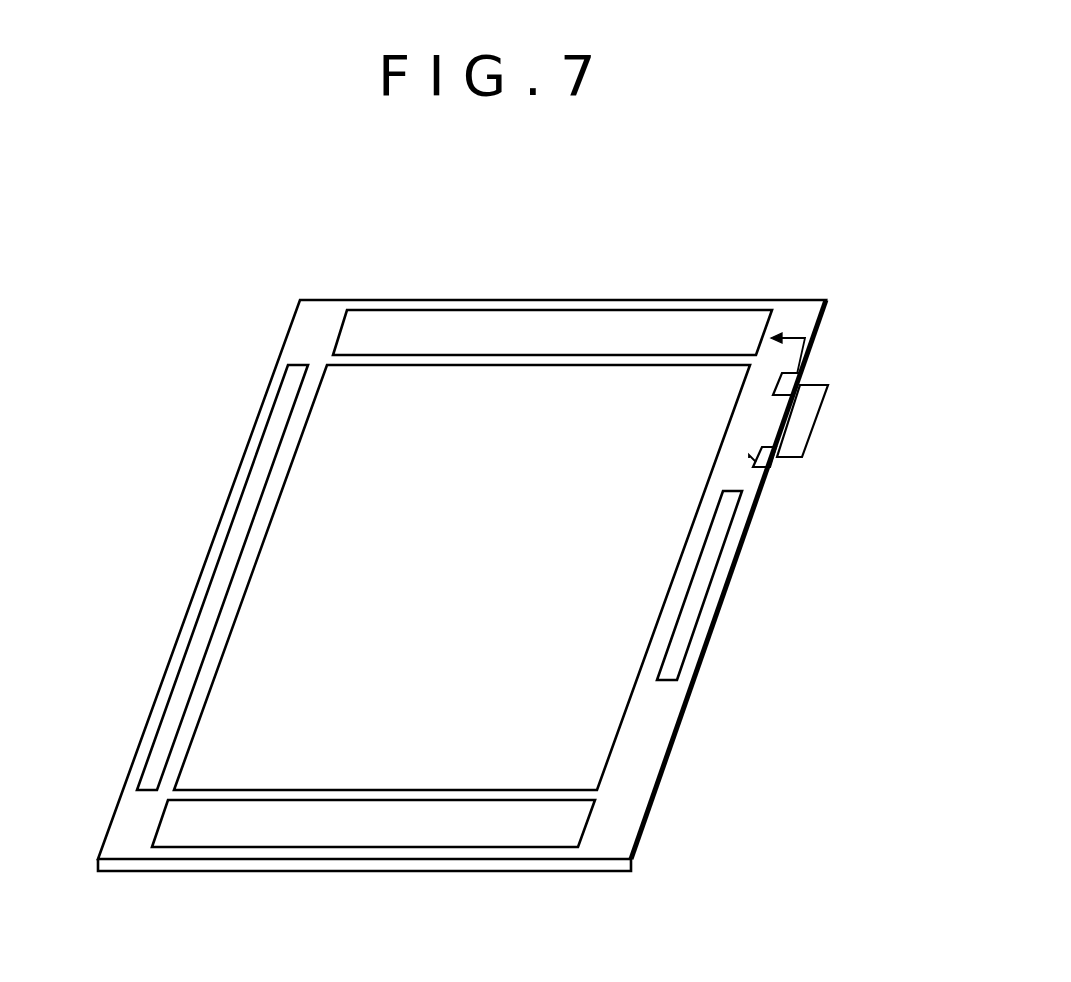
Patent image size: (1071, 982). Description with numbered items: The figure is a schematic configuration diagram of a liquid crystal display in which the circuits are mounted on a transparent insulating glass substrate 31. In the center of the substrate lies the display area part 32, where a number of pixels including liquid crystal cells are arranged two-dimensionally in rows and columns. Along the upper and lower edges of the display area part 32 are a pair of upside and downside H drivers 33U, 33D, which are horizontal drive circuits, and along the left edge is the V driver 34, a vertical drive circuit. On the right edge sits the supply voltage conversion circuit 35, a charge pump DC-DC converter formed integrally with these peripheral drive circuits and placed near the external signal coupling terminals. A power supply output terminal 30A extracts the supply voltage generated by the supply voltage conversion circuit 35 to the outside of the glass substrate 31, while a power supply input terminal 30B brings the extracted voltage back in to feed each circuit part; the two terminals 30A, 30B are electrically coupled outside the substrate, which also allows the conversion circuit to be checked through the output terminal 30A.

The glass substrate 31 is at (640, 757).
The display area part 32 is at (222, 698).
The upside H driver 33U is at (408, 328).
The downside H driver 33D is at (210, 830).
The V driver 34 is at (237, 540).
The supply voltage conversion circuit 35 is at (700, 587).
The power supply output terminal 30A is at (770, 468).
The power supply input terminal 30B is at (792, 381).